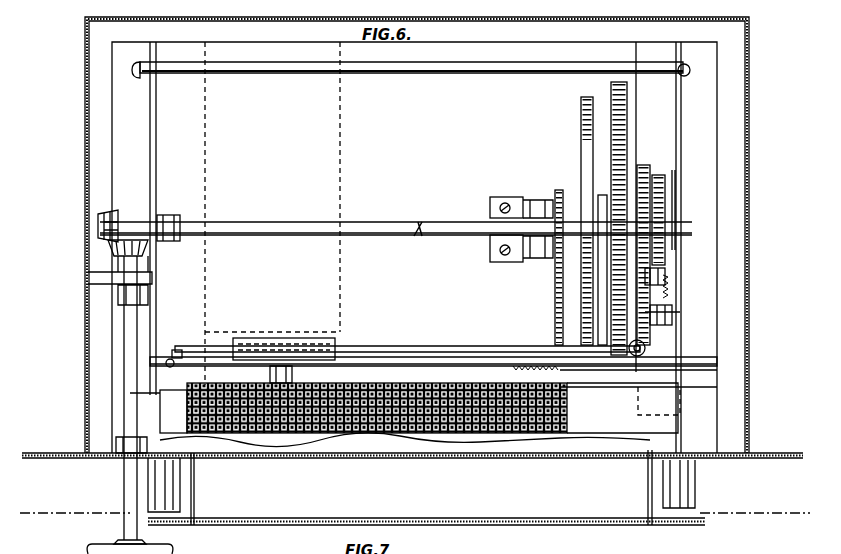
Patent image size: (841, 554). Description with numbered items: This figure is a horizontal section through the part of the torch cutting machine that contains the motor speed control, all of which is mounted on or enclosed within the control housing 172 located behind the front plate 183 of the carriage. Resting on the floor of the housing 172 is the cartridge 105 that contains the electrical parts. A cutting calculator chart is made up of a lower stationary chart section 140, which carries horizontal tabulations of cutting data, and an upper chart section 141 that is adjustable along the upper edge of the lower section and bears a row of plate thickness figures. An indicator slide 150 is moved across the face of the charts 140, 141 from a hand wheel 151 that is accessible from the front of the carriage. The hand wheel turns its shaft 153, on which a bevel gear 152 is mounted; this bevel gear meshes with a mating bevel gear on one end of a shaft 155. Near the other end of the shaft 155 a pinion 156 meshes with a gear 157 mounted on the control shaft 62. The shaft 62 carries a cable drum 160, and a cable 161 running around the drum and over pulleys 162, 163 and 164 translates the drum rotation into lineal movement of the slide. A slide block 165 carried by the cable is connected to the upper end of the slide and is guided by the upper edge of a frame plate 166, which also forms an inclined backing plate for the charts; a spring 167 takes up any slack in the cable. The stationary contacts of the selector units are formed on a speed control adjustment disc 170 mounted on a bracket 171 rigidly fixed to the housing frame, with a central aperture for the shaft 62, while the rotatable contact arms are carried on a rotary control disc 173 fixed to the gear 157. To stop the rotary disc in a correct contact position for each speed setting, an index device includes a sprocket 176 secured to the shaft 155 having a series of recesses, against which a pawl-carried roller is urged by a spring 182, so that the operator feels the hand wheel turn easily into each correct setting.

The control shaft 62 is at (421, 238).
The cartridge 105 is at (340, 130).
The lower stationary chart section 140 is at (481, 426).
The upper chart section 141 is at (471, 368).
The indicator slide 150 is at (110, 215).
The hand wheel 151 is at (172, 549).
The bevel gear 152 is at (148, 245).
The shaft of the hand wheel 153 is at (130, 338).
The shaft 155 is at (349, 221).
The pinion 156 is at (560, 273).
The gear 157 is at (590, 295).
The cable drum 160 is at (665, 283).
The cable 161 is at (441, 353).
The pulley 162 is at (638, 372).
The pulley 163 is at (182, 352).
The pulley 164 is at (672, 320).
The slide block 165 is at (296, 340).
The frame plate 166 is at (386, 353).
The spring 167 is at (526, 368).
The speed control adjustment disc 170 is at (610, 113).
The bracket 171 is at (513, 196).
The control housing 172 is at (560, 48).
The rotary control disc 173 is at (578, 100).
The sprocket 176 is at (648, 250).
The spring 182 is at (668, 298).
The front plate 183 is at (62, 514).